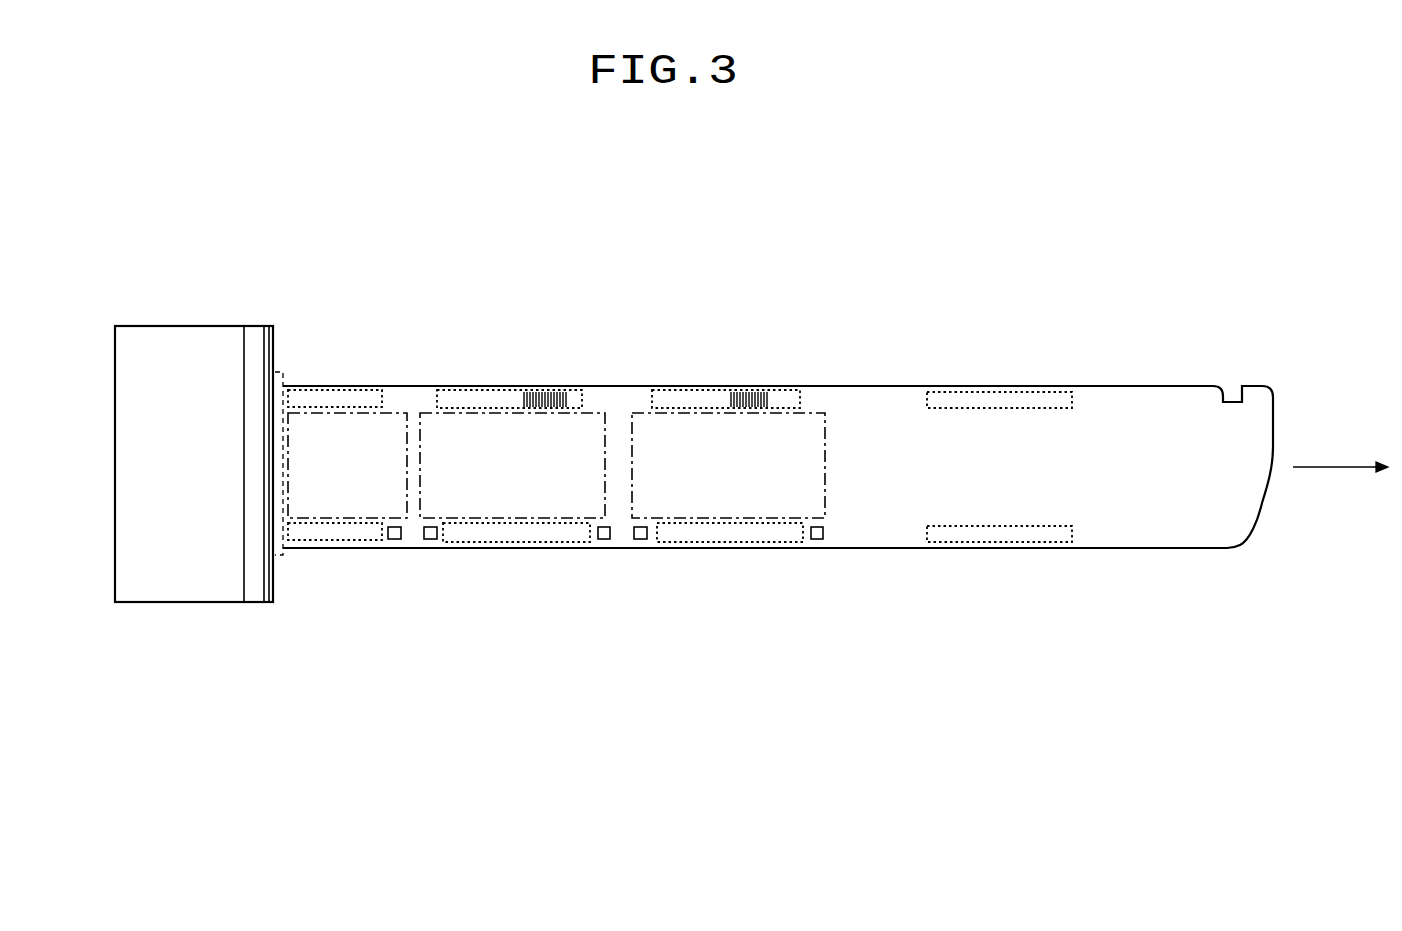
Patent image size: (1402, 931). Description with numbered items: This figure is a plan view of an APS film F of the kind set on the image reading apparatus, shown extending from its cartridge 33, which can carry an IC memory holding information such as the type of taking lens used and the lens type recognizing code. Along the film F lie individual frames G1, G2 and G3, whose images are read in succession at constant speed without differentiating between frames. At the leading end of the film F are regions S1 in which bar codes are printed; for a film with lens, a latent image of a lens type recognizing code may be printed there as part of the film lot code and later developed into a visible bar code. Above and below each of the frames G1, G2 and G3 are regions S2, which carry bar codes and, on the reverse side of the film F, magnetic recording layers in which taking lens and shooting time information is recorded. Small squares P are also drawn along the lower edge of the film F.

The cartridge 33 is at (218, 372).
The film F is at (1133, 495).
The regions at the leading end of the film S1 is at (963, 390).
The regions above and below the frames S2 is at (293, 383).
The frame G1 is at (793, 448).
The frame G2 is at (573, 437).
The frame G3 is at (373, 438).
The perforation P is at (395, 540).